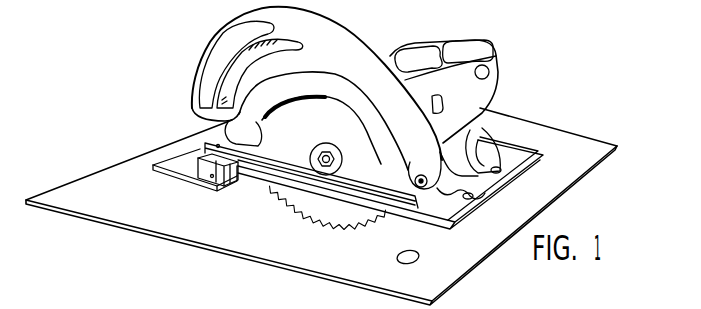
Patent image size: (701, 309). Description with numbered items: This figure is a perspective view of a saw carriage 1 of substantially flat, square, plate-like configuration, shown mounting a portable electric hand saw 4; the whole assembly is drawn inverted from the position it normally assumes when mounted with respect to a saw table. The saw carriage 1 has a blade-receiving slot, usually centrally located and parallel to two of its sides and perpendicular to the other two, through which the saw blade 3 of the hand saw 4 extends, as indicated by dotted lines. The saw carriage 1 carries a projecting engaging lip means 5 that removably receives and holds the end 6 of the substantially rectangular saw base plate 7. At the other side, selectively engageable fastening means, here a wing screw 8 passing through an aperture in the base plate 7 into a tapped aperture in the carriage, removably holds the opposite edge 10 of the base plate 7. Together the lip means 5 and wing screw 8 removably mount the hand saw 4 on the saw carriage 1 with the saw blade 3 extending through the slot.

The saw carriage 1 is at (180, 264).
The saw blade 3 is at (321, 224).
The portable electric hand saw 4 is at (514, 66).
The projecting engaging lip means 5 is at (196, 180).
The end of the saw base plate 6 is at (198, 158).
The saw base plate 7 is at (250, 197).
The wing screw 8 is at (482, 197).
The opposite edge of the base plate 10 is at (456, 216).